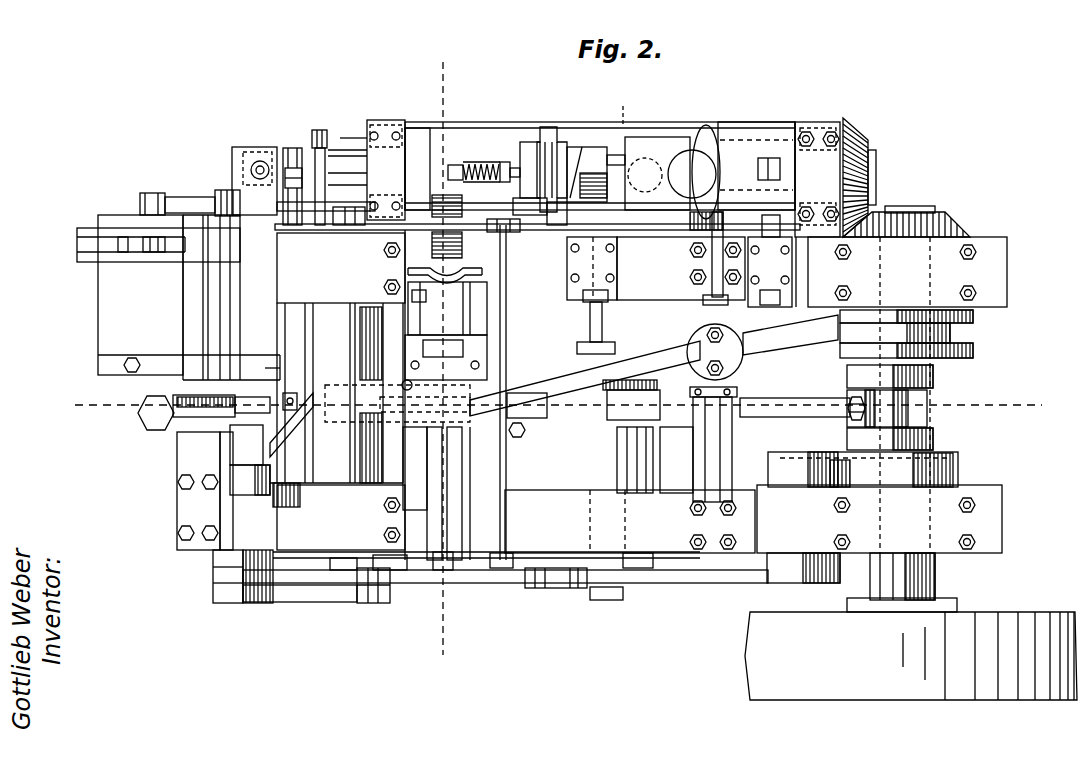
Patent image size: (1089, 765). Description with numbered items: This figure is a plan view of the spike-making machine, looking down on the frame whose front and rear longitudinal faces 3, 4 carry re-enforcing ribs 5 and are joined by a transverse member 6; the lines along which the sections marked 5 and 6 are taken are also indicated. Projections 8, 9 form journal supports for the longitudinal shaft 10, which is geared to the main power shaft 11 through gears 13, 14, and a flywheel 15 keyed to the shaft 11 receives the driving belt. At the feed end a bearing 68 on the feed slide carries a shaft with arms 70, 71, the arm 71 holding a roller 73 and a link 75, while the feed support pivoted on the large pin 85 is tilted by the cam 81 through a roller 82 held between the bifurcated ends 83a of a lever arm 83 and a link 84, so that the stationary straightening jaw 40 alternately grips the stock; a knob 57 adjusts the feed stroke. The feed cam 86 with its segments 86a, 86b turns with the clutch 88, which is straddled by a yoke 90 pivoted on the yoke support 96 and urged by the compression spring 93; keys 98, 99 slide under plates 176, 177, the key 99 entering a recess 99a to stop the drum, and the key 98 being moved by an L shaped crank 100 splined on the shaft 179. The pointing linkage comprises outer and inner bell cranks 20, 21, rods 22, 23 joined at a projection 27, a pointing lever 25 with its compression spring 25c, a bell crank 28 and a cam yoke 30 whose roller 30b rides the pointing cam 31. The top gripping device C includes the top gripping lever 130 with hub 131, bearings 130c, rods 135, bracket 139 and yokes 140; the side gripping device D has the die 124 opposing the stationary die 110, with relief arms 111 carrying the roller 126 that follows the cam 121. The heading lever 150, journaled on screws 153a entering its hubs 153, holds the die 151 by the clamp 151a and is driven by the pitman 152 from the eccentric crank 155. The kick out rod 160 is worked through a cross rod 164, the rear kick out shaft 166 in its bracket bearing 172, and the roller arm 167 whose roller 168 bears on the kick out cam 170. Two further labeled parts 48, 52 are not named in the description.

The front longitudinal face 3 is at (673, 545).
The rear longitudinal face 4 is at (509, 392).
The re-enforcing ribs 5 is at (443, 361).
The transverse member 6 is at (557, 407).
The projection 8 is at (366, 222).
The projection 9 is at (828, 127).
The longitudinal shaft 10 is at (333, 170).
The main power shaft 11 is at (986, 580).
The gear 13 is at (957, 218).
The gear 14 is at (866, 128).
The flywheel 15 is at (1066, 622).
The outer bell cranks 20 is at (232, 579).
The inner bell cranks 21 is at (233, 473).
The connecting rod 22 is at (470, 584).
The rod 23 is at (341, 599).
The pointing lever 25 is at (287, 432).
The compression spring 25c is at (423, 386).
The projection 27 is at (398, 590).
The bell crank 28 is at (808, 571).
The cam yoke 30 is at (833, 454).
The roller 30b is at (884, 481).
The pointing cam 31 is at (960, 463).
The stationary straightening jaw 40 is at (187, 504).
The housing 48 is at (447, 128).
The plate 52 is at (177, 197).
The knob 57 is at (265, 160).
The bearing 68 is at (192, 309).
The arm 70 is at (193, 367).
The arm 71 is at (183, 244).
The roller 73 is at (143, 244).
The link 75 is at (78, 242).
The cam 81 is at (320, 140).
The roller 82 is at (313, 155).
The lever arm 83 is at (280, 205).
The bifurcated ends 83a is at (286, 160).
The link 84 is at (233, 207).
The large pin 85 is at (147, 413).
The cam 86 is at (704, 132).
The segment 86a is at (722, 165).
The segment 86b is at (660, 140).
The clutch 88 is at (580, 160).
The yoke 90 is at (570, 133).
The compression spring 93 is at (468, 162).
The yoke support 96 is at (396, 170).
The key 98 is at (588, 224).
The key 99 is at (775, 235).
The recess 99a is at (780, 170).
The L shaped crank 100 is at (576, 322).
The stationary die 110 is at (456, 502).
The relief arms 111 is at (426, 300).
The cam 121 is at (494, 160).
The die 124 is at (434, 351).
The roller 126 is at (440, 237).
The top gripping lever 130 is at (530, 381).
The bearings 130c is at (333, 305).
The hub 131 is at (341, 548).
The rods 135 is at (668, 415).
The bracket 139 is at (696, 455).
The yoke 140 is at (975, 328).
The heading lever 150 is at (573, 433).
The die 151 is at (566, 468).
The clamp 151a is at (545, 421).
The pitman 152 is at (747, 403).
The hubs 153 is at (630, 278).
The large screws 153a is at (617, 601).
The eccentric crank 155 is at (900, 438).
The kick out rod 160 is at (433, 588).
The cross rod 164 is at (508, 532).
The rear kick out shaft 166 is at (407, 226).
The roller arm 167 is at (306, 234).
The roller 168 is at (345, 137).
The kick out cam 170 is at (370, 102).
The bracket bearing 172 is at (650, 300).
The plate 176 is at (570, 269).
The plate 177 is at (796, 268).
The shaft 179 is at (680, 300).
The top gripping device C is at (982, 334).
The side gripping device D is at (487, 352).